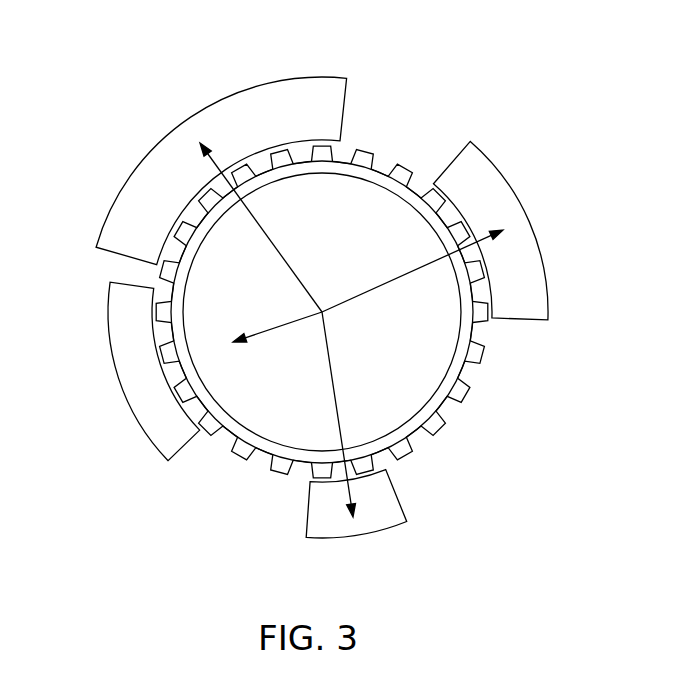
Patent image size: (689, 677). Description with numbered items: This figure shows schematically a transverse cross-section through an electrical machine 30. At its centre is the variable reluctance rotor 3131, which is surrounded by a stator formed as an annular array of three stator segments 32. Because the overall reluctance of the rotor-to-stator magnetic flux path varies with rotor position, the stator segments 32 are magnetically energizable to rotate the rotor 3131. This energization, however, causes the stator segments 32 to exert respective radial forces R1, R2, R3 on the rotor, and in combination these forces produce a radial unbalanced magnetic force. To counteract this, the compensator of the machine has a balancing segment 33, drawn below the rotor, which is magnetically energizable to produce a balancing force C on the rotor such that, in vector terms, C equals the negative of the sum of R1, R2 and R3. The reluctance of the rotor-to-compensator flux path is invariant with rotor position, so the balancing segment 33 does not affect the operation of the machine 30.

The electrical machine 30 is at (435, 84).
The variable reluctance rotor 3131 is at (468, 394).
The stator segments 32 is at (232, 103).
The balancing segment 33 is at (377, 530).
The radial force R1 is at (429, 271).
The radial force R2 is at (261, 214).
The radial force R3 is at (268, 325).
The balancing force C is at (339, 424).